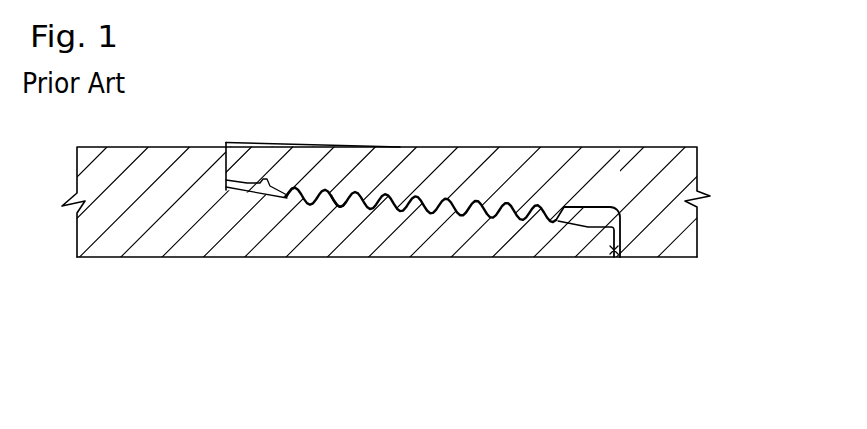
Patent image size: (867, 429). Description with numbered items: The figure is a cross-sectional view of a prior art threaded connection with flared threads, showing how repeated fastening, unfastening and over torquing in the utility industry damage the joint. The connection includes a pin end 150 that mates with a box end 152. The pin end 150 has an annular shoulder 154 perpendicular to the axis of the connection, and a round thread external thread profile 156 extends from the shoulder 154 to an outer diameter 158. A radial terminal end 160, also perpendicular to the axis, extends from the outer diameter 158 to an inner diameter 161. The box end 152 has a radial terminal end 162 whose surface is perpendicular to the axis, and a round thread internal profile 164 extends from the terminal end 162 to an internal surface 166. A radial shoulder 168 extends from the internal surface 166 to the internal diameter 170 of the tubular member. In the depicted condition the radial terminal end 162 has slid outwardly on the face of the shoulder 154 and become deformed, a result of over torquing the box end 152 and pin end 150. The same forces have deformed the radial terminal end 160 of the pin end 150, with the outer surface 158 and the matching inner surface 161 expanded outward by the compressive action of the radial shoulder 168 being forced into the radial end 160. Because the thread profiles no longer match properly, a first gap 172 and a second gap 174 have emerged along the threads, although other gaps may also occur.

The pin end 150 is at (421, 318).
The box end 152 is at (489, 82).
The annular shoulder 154 is at (250, 188).
The round thread external thread profile 156 is at (325, 189).
The outer diameter 158 is at (611, 207).
The radial terminal end 160 is at (615, 257).
The inner diameter 161 is at (608, 257).
The radial terminal end 162 is at (226, 142).
The round thread internal profile 164 is at (289, 197).
The internal surface 166 is at (584, 207).
The radial shoulder 168 is at (607, 237).
The internal diameter 170 is at (677, 257).
The first gap 172 is at (281, 187).
The second gap 174 is at (336, 205).